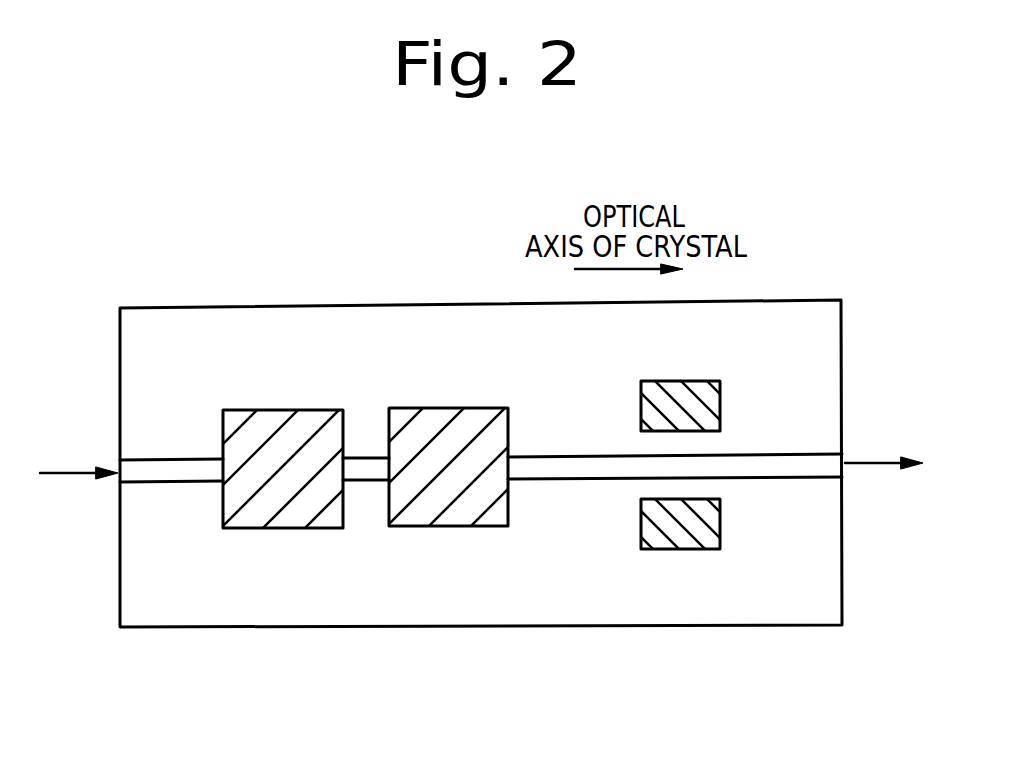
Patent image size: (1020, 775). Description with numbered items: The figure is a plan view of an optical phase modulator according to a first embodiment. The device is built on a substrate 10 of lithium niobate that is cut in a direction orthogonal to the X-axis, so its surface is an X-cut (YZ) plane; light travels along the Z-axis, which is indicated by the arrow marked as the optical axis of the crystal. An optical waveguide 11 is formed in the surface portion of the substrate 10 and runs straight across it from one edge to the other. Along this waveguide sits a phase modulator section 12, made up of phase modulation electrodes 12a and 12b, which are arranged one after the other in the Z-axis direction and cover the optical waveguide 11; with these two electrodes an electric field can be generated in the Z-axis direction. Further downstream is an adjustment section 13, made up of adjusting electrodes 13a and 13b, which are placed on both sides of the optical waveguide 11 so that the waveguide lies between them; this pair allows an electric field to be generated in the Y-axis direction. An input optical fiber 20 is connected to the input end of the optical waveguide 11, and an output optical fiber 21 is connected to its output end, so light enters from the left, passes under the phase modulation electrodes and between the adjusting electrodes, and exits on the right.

The substrate 10 is at (793, 300).
The optical waveguide 11 is at (160, 459).
The phase modulator section 12 is at (500, 240).
The phase modulation electrode 12a is at (272, 410).
The phase modulation electrode 12b is at (437, 408).
The adjustment section 13 is at (718, 695).
The adjusting electrode 13a is at (641, 409).
The adjusting electrode 13b is at (665, 550).
The input optical fiber 20 is at (66, 472).
The output optical fiber 21 is at (877, 462).